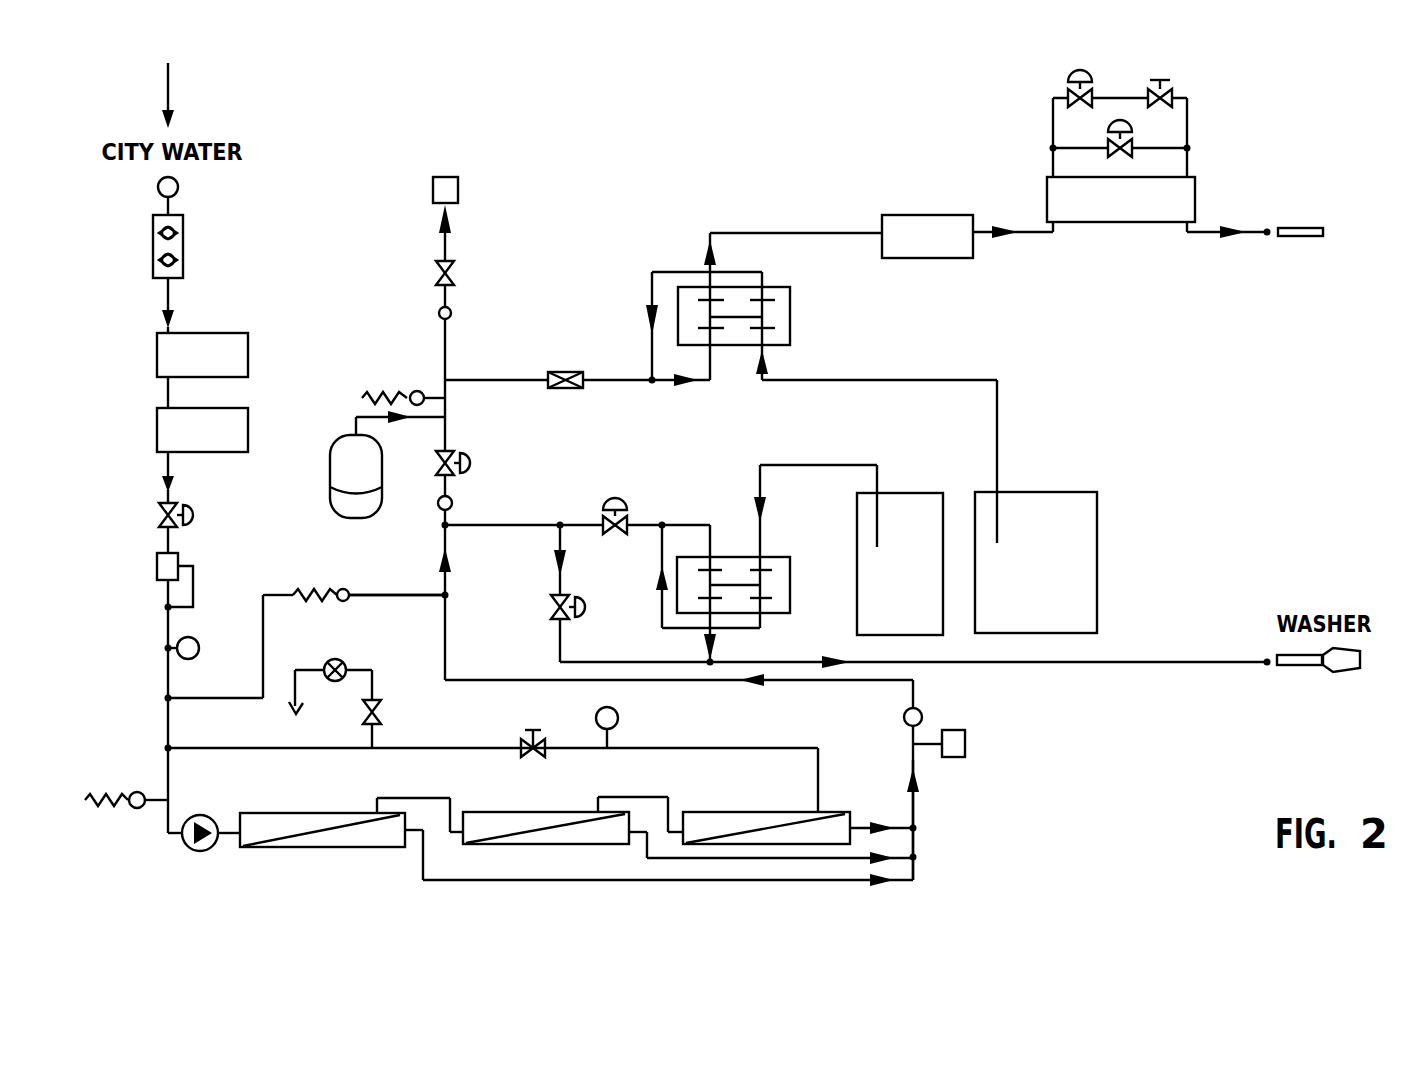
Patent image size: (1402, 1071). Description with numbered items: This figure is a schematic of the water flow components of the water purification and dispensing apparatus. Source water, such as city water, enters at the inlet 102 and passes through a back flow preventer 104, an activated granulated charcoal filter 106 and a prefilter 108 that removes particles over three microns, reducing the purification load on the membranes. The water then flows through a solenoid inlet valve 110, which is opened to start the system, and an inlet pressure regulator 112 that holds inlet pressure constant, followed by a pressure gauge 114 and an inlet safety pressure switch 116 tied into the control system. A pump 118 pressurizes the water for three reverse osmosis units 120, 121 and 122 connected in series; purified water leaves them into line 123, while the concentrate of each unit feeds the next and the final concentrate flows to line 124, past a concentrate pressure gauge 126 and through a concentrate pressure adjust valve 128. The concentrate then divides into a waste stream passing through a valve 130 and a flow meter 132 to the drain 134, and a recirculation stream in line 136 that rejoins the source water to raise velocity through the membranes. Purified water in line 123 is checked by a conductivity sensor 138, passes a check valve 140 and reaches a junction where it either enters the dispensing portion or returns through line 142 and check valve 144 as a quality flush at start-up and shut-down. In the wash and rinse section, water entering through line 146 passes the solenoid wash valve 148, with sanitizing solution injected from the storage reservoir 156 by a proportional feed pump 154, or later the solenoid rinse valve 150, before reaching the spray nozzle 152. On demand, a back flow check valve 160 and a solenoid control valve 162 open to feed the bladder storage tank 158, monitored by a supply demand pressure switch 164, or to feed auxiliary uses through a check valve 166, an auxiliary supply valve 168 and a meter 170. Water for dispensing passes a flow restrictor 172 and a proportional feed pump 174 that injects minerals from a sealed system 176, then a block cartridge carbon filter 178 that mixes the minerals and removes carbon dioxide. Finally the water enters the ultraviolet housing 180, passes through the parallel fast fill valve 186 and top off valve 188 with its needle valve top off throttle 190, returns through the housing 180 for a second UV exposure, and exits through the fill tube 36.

The fill tube 36 is at (1313, 237).
The inlet 102 is at (178, 187).
The back flow preventer 104 is at (183, 251).
The activated granulated charcoal filter 106 is at (157, 345).
The prefilter 108 is at (157, 427).
The solenoid inlet valve 110 is at (158, 502).
The inlet pressure regulator 112 is at (157, 558).
The pressure gauge 114 is at (197, 642).
The inlet safety pressure switch 116 is at (137, 792).
The pump 118 is at (201, 815).
The reverse osmosis unit 120 is at (330, 811).
The reverse osmosis unit 121 is at (513, 810).
The reverse osmosis unit 122 is at (740, 810).
The line 123 is at (915, 810).
The line 124 is at (805, 742).
The concentrate pressure gauge 126 is at (618, 715).
The concentrate pressure adjust valve 128 is at (525, 738).
The valve 130 is at (385, 705).
The flow meter 132 is at (332, 660).
The drain 134 is at (292, 712).
The line 136 is at (295, 752).
The conductivity sensor 138 is at (966, 738).
The check valve 140 is at (920, 713).
The line 142 is at (395, 598).
The check valve 144 is at (337, 583).
The line 146 is at (447, 582).
The solenoid wash valve 148 is at (608, 497).
The solenoid rinse valve 150 is at (549, 610).
The spray nozzle 152 is at (1343, 672).
The proportional feed pump 154 is at (735, 553).
The storage reservoir 156 is at (927, 490).
The storage tank 158 is at (340, 437).
The back flow check valve 160 is at (453, 505).
The solenoid control valve 162 is at (472, 455).
The supply demand pressure switch 164 is at (410, 387).
The check valve 166 is at (433, 307).
The auxiliary supply valve 168 is at (433, 262).
The meter 170 is at (432, 188).
The flow restrictor 172 is at (572, 372).
The proportional feed pump 174 is at (790, 317).
The sealed system 176 is at (1078, 490).
The block cartridge carbon filter 178 is at (920, 215).
The housing 180 is at (1118, 222).
The fast fill valve 186 is at (1128, 140).
The top off valve 188 is at (1068, 90).
The needle valve top off throttle 190 is at (1170, 90).